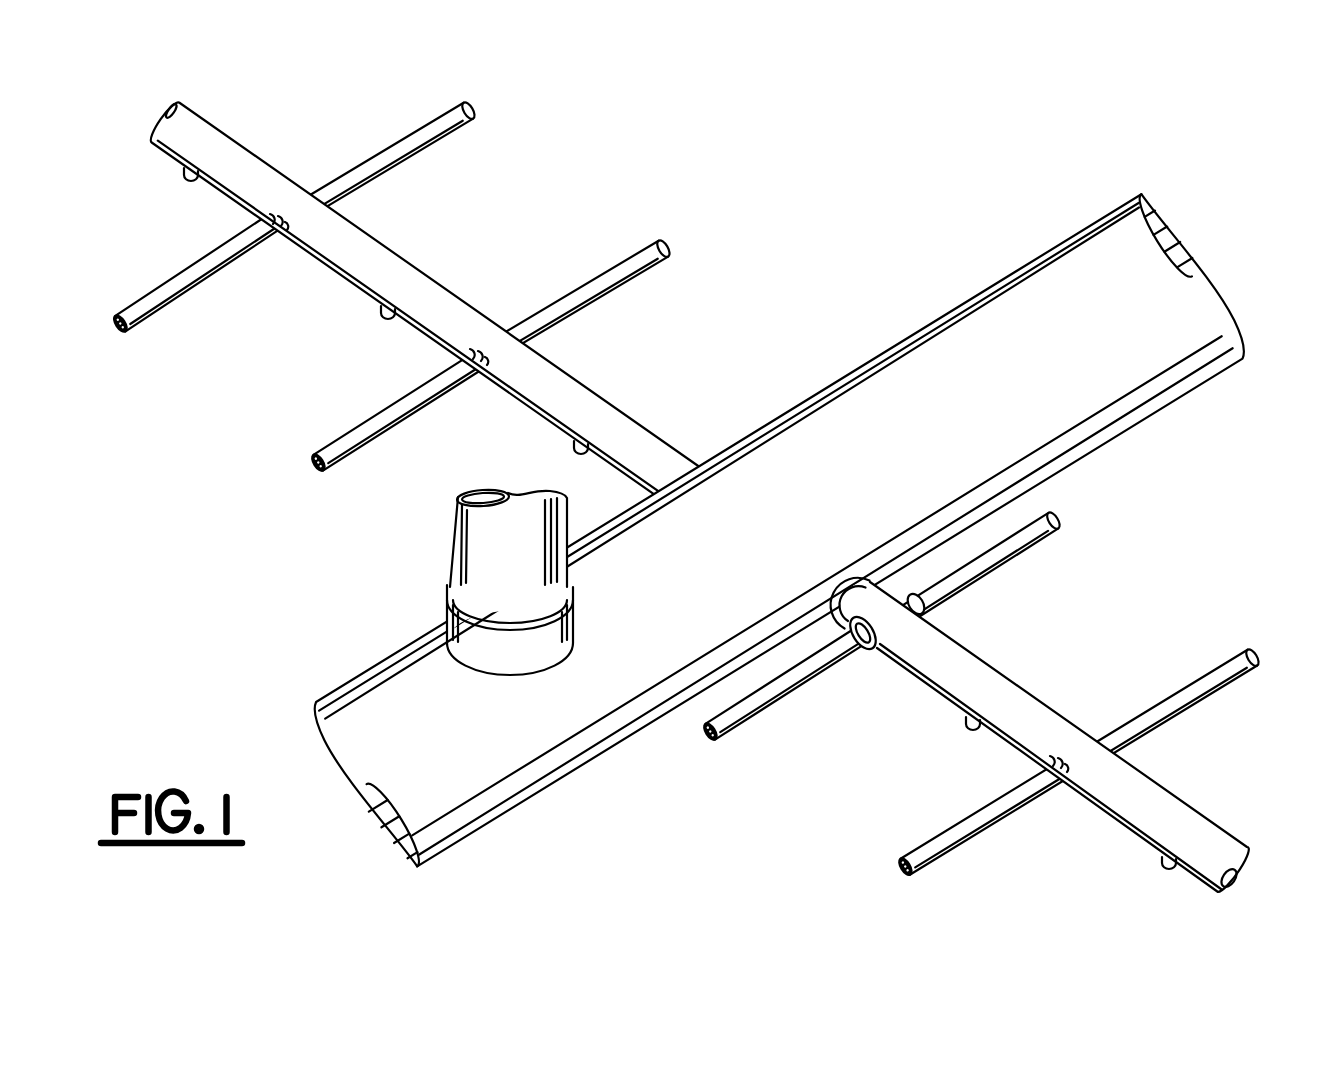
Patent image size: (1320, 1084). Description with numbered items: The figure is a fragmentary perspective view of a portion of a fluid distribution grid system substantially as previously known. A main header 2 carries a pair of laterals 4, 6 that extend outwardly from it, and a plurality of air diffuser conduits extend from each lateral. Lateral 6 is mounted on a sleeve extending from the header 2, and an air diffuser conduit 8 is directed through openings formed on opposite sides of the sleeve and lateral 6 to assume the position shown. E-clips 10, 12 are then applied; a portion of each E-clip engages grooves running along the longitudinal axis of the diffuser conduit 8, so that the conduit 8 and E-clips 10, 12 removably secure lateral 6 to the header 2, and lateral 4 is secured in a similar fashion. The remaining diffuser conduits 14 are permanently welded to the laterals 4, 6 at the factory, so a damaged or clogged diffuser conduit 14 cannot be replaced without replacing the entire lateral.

The main header 2 is at (972, 328).
The lateral 4 is at (582, 388).
The lateral 6 is at (1030, 708).
The air diffuser conduit 8 is at (745, 712).
The E-clip 10 is at (863, 652).
The E-clip 12 is at (923, 608).
The diffuser conduits 14 is at (433, 130).